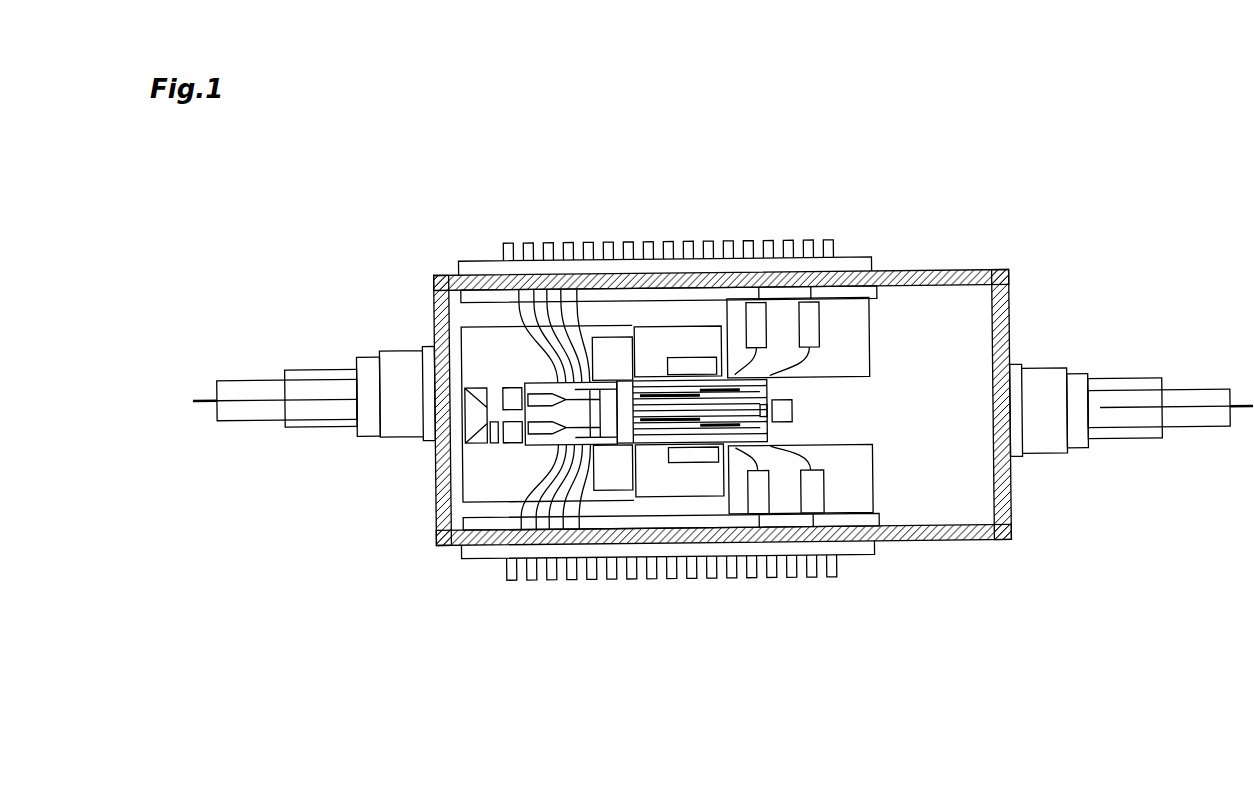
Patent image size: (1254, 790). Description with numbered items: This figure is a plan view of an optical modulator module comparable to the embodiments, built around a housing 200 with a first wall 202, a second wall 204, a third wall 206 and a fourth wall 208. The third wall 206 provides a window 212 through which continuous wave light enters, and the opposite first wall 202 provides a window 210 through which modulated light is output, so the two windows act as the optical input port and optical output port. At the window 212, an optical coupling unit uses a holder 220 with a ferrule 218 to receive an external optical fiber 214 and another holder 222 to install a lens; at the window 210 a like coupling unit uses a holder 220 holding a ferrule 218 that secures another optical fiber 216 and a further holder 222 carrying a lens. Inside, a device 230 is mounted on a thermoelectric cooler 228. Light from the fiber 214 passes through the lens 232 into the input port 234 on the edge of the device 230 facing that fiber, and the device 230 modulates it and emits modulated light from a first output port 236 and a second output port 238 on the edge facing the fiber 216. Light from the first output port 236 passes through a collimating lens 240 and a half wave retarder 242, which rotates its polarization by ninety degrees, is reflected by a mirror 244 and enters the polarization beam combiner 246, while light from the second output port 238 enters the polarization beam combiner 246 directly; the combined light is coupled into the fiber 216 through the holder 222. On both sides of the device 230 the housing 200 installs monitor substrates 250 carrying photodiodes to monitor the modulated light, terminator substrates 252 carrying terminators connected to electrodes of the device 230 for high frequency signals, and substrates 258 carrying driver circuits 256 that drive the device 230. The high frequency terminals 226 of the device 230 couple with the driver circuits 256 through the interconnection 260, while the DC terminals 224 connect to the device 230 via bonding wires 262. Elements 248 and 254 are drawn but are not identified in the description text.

The housing 200 is at (1016, 265).
The first wall 202 is at (434, 279).
The second wall 204 is at (968, 538).
The third wall 206 is at (1012, 304).
The fourth wall 208 is at (947, 278).
The window 210 is at (418, 401).
The window 212 is at (1012, 412).
The optical fiber 214 is at (1198, 407).
The optical fiber 216 is at (233, 394).
The ferrule 218 is at (268, 409).
The holder 220 is at (322, 419).
The holder 222 is at (390, 369).
The terminals 224 is at (600, 300).
The terminals 226 is at (810, 252).
The thermoelectric cooler 228 is at (478, 328).
The device 230 is at (768, 386).
The lens 232 is at (793, 411).
The input port 234 is at (775, 410).
The first output port 236 is at (512, 443).
The second output port 238 is at (518, 385).
The collimating lens 240 is at (528, 445).
The half wave retarder 242 is at (504, 440).
The mirror 244 is at (491, 438).
The polarization beam combiner 246 is at (470, 395).
The mirror 248 is at (501, 391).
The monitor substrates 250 is at (677, 338).
The terminator substrates 252 is at (622, 345).
The memory chip 254 is at (704, 366).
The driver circuits 256 is at (813, 328).
The substrates 258 is at (848, 358).
The interconnection 260 is at (815, 292).
The bonding wires 262 is at (540, 285).